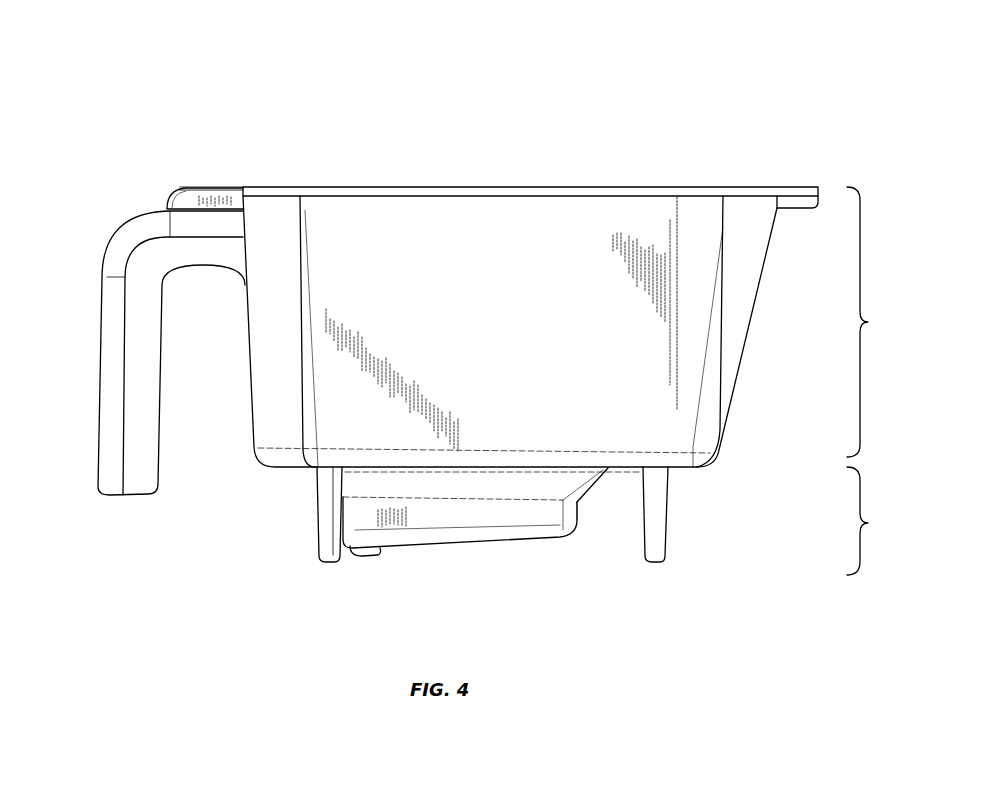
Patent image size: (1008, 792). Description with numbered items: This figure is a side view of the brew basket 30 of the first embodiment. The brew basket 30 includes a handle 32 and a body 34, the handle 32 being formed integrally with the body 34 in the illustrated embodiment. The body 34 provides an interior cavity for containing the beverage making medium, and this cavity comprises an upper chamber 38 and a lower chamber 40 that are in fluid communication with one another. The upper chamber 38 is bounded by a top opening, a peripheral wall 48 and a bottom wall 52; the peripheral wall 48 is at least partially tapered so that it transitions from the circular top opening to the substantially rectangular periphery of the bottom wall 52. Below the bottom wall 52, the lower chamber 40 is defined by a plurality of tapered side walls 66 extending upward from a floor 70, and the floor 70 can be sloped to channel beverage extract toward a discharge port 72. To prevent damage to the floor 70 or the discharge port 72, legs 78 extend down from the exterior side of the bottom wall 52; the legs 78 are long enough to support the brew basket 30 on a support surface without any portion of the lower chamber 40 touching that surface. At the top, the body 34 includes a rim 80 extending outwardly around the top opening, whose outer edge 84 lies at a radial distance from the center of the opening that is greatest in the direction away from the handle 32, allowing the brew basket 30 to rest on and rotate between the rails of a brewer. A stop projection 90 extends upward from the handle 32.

The brew basket 30 is at (710, 66).
The handle 32 is at (113, 378).
The body 34 is at (741, 472).
The upper chamber 38 is at (872, 322).
The lower chamber 40 is at (872, 521).
The peripheral wall 48 is at (488, 245).
The bottom wall 52 is at (683, 472).
The tapered side walls 66 is at (597, 483).
The floor 70 is at (465, 545).
The discharge port 72 is at (363, 556).
The legs 78 is at (330, 535).
The rim 80 is at (377, 186).
The edge 84 is at (818, 193).
The stop projection 90 is at (190, 198).